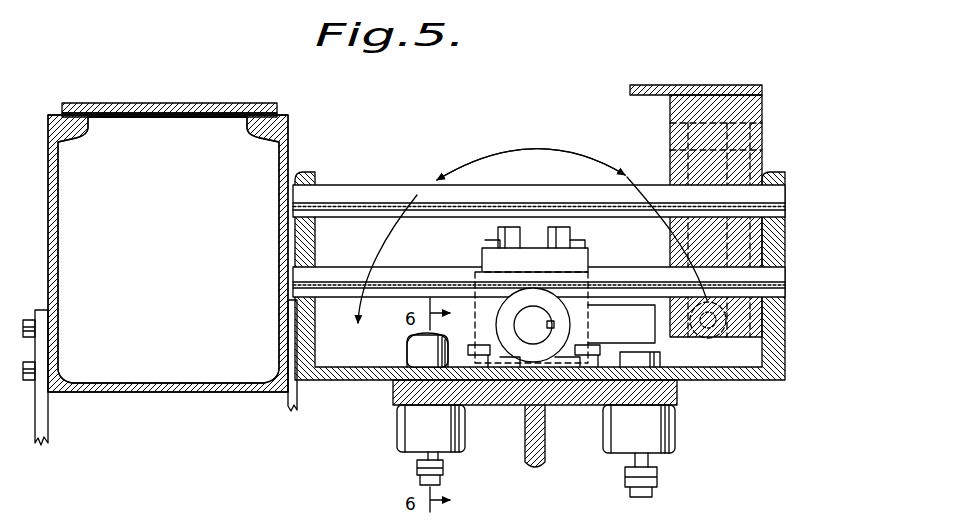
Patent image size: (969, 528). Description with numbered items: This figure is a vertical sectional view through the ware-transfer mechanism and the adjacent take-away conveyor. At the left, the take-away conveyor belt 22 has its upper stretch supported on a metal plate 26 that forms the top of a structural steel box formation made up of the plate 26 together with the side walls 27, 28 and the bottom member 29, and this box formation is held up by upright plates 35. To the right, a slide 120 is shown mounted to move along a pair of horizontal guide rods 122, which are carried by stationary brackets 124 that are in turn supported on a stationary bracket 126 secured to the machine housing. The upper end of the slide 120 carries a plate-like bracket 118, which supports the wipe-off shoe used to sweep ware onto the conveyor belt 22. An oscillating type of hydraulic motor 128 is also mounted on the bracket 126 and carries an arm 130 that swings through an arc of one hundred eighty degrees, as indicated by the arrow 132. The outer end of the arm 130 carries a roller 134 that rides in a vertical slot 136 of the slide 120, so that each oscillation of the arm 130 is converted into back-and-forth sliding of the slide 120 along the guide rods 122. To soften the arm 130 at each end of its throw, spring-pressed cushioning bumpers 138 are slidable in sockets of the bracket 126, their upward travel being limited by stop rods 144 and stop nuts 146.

The take-away conveyor belt 22 is at (200, 103).
The metal plate 26 is at (155, 117).
The box formation member 27 is at (283, 216).
The box formation member 28 is at (55, 233).
The box formation member 29 is at (147, 383).
The upright plates 35 is at (48, 415).
The plate-like bracket 118 is at (658, 85).
The slide 120 is at (738, 140).
The horizontal guide rods 122 is at (458, 205).
The stationary brackets 124 is at (775, 325).
The stationary bracket 126 is at (527, 440).
The oscillating hydraulic motor 128 is at (480, 315).
The arm 130 is at (605, 320).
The arrow 132 is at (540, 148).
The roller 134 is at (706, 330).
The vertical slot 136 is at (673, 150).
The cushioning bumpers 138 is at (410, 347).
The stop rods 144 is at (650, 460).
The stop nuts 146 is at (417, 470).